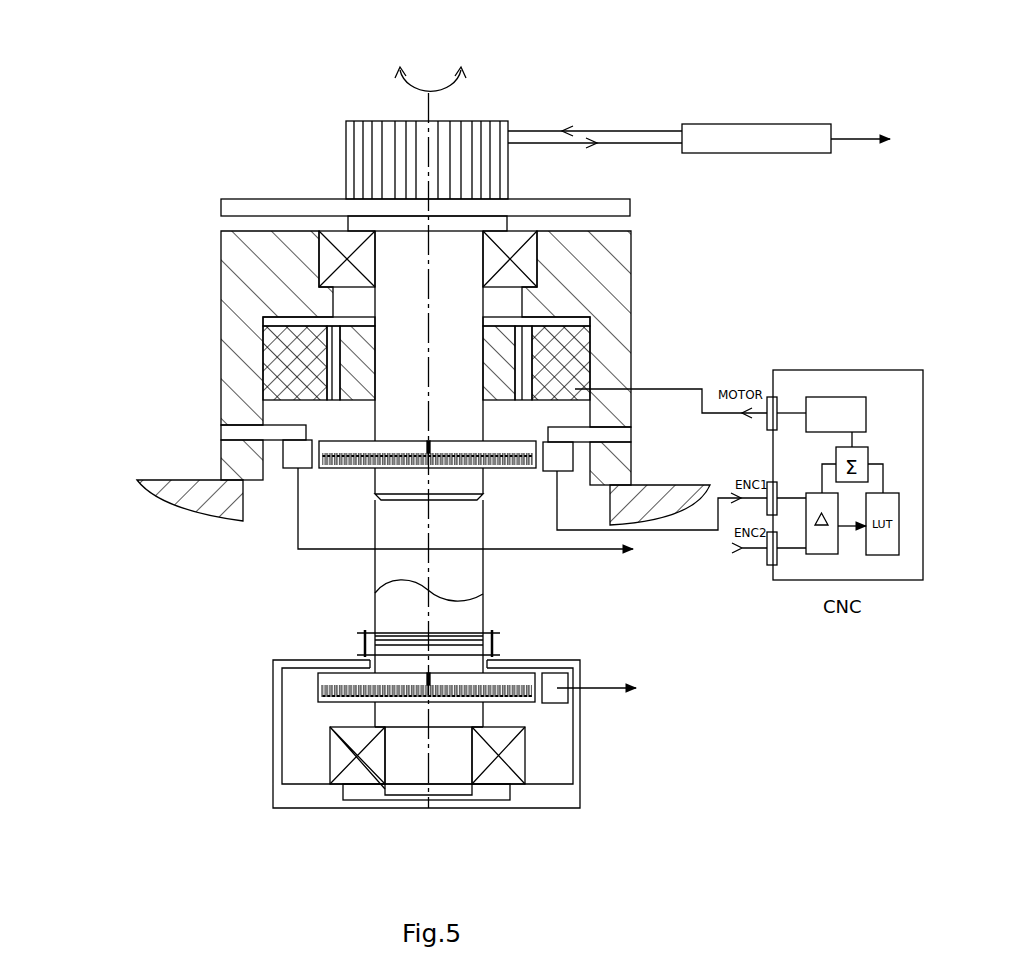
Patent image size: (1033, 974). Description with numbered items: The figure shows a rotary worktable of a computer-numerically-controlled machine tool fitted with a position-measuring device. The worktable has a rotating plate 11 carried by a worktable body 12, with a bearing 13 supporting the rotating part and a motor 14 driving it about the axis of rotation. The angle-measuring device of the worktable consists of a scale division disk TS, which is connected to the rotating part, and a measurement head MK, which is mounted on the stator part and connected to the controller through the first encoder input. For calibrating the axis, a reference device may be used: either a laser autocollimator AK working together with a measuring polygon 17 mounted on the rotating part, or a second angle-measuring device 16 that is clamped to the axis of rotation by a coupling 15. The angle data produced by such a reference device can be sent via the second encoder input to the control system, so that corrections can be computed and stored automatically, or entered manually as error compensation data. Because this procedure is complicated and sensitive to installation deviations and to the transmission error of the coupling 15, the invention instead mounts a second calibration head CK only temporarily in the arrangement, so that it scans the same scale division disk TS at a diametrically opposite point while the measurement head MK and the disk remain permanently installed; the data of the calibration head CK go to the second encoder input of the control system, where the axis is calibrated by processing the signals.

The rotating plate 11 is at (237, 205).
The worktable body 12 is at (237, 247).
The bearing 13 is at (323, 270).
The motor 14 is at (267, 335).
The coupling 15 is at (365, 638).
The second angle-measuring device 16 is at (275, 750).
The measuring polygon 17 is at (480, 128).
The calibration head CK is at (292, 450).
The scale division disk TS is at (322, 465).
The measurement head MK is at (557, 455).
The laser autocollimator AK is at (719, 126).